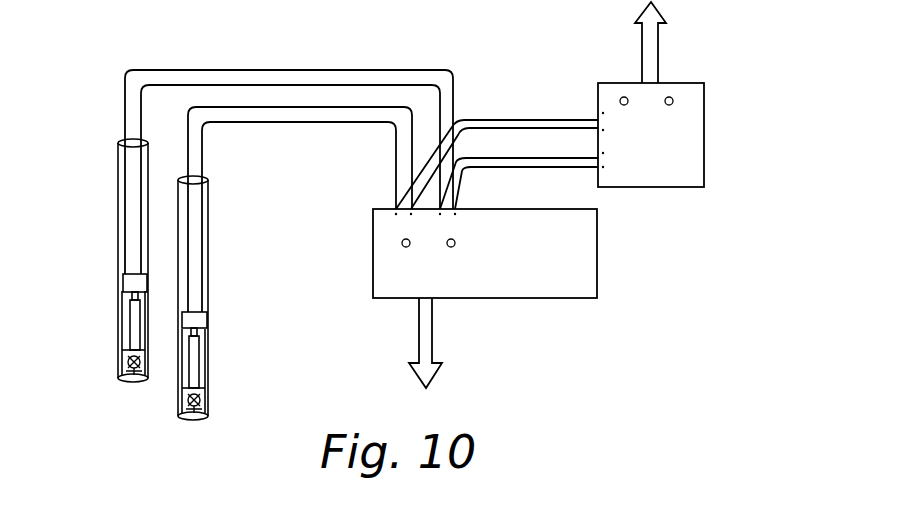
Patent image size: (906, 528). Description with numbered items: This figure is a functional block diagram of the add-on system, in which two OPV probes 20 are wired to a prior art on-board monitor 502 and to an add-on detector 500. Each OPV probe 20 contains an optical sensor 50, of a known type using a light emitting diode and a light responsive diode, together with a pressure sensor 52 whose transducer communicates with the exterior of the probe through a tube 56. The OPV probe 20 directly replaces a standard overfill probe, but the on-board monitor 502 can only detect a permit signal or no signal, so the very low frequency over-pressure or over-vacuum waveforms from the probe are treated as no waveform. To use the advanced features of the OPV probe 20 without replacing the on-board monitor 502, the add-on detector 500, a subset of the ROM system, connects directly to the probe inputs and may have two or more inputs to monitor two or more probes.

The OPV probe 20 is at (118, 213).
The optical sensor 50 is at (134, 366).
The pressure sensor 52 is at (121, 278).
The tube 56 is at (134, 325).
The add-on detector 500 is at (680, 83).
The on-board monitor 502 is at (548, 298).